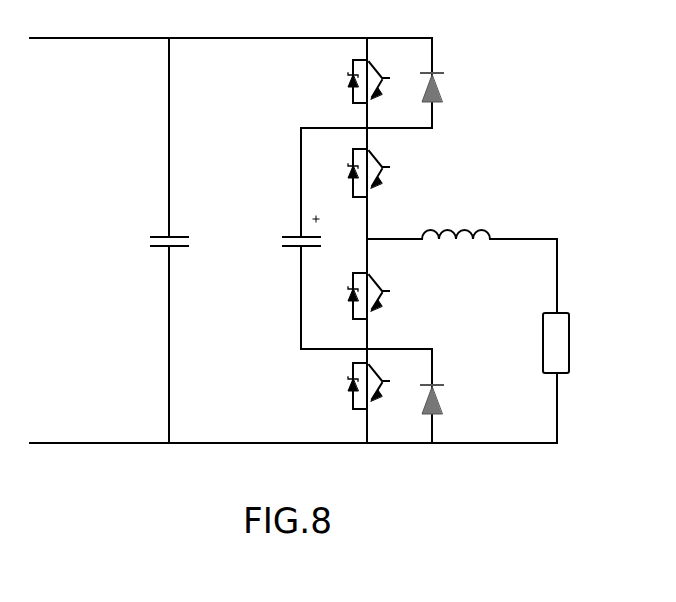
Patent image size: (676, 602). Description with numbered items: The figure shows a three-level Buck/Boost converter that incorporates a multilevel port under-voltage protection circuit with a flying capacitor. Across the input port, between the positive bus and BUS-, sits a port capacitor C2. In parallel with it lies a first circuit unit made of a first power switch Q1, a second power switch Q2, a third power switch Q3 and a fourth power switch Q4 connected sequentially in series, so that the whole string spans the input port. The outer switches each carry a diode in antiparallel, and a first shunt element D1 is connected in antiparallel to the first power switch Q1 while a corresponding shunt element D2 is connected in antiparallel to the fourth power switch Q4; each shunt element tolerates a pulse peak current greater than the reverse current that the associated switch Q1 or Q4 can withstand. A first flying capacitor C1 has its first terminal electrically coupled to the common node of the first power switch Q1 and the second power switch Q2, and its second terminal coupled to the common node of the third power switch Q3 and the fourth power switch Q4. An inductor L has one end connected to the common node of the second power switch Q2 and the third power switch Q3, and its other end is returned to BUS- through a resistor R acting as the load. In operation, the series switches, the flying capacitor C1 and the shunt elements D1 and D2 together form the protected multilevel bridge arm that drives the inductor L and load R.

The first power switch Q1 is at (380, 89).
The second power switch Q2 is at (383, 182).
The third power switch Q3 is at (383, 307).
The fourth power switch Q4 is at (380, 397).
The first shunt element D1 is at (453, 83).
The first shunt element D2 is at (454, 396).
The first flying capacitor C1 is at (291, 238).
The port capacitor C2 is at (157, 240).
The inductor L is at (462, 253).
The resistor R is at (568, 341).
The negative bus of the input port BUS- is at (293, 424).